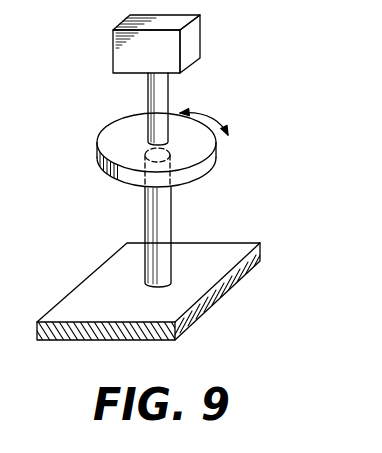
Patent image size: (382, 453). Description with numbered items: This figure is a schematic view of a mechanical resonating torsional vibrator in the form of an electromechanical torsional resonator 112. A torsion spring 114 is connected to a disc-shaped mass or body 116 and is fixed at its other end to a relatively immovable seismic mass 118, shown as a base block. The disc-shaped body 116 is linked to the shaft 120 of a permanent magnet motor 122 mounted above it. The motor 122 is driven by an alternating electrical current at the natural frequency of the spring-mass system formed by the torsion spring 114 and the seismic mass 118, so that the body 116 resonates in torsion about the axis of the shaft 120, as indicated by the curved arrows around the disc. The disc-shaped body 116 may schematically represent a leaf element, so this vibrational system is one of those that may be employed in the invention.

The electromechanical torsional resonator 112 is at (110, 100).
The torsion spring 114 is at (162, 215).
The disc-shaped mass or body 116 is at (116, 154).
The seismic mass 118 is at (118, 258).
The shaft 120 is at (168, 97).
The permanent magnet motor 122 is at (193, 39).